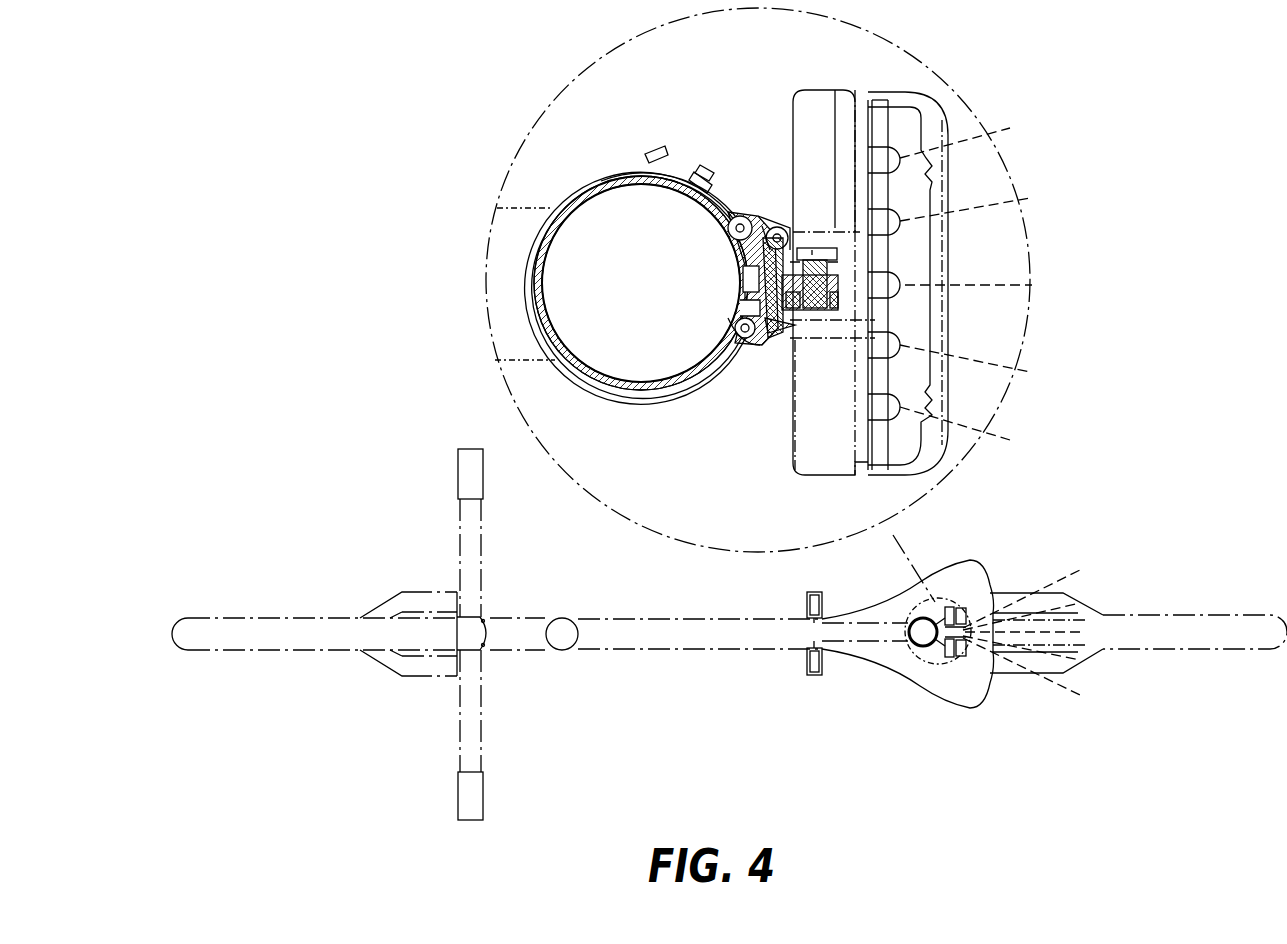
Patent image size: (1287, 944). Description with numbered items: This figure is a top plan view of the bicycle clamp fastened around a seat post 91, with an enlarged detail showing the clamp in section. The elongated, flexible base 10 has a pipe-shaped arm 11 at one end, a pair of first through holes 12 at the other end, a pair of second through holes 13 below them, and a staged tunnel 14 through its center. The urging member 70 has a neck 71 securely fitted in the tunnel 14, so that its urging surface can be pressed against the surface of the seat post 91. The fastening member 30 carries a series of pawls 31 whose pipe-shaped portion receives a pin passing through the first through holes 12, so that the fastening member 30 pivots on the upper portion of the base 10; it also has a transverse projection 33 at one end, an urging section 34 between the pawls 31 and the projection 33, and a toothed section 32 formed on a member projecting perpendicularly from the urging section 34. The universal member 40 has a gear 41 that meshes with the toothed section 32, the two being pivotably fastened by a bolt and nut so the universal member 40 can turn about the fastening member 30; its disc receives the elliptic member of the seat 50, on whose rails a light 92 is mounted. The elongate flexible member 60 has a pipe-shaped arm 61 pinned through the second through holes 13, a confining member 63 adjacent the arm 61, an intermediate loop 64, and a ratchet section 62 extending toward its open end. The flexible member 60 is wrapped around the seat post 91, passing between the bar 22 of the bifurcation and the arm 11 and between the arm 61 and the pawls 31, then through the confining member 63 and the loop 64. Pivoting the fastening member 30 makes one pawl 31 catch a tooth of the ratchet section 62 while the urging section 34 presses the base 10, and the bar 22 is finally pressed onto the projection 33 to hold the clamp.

The base 10 is at (737, 328).
The pipe-shaped arm 11 is at (733, 345).
The first through holes 12 is at (774, 226).
The second through holes 13 is at (728, 228).
The staged tunnel 14 is at (747, 213).
The bar 22 is at (778, 340).
The fastening member 30 is at (803, 226).
The pawls 31 is at (762, 224).
The toothed section 32 is at (840, 290).
The transverse projection 33 is at (775, 350).
The urging section 34 is at (745, 302).
The universal member 40 is at (837, 312).
The gear 41 is at (838, 300).
The seat 50 is at (833, 240).
The flexible member 60 is at (590, 385).
The pipe-shaped arm 61 is at (722, 187).
The ratchet section 62 is at (700, 390).
The confining member 63 is at (707, 168).
The intermediate loop 64 is at (655, 157).
The urging member 70 is at (742, 265).
The neck 71 is at (745, 280).
The seat post 91 is at (588, 190).
The light 92 is at (835, 90).